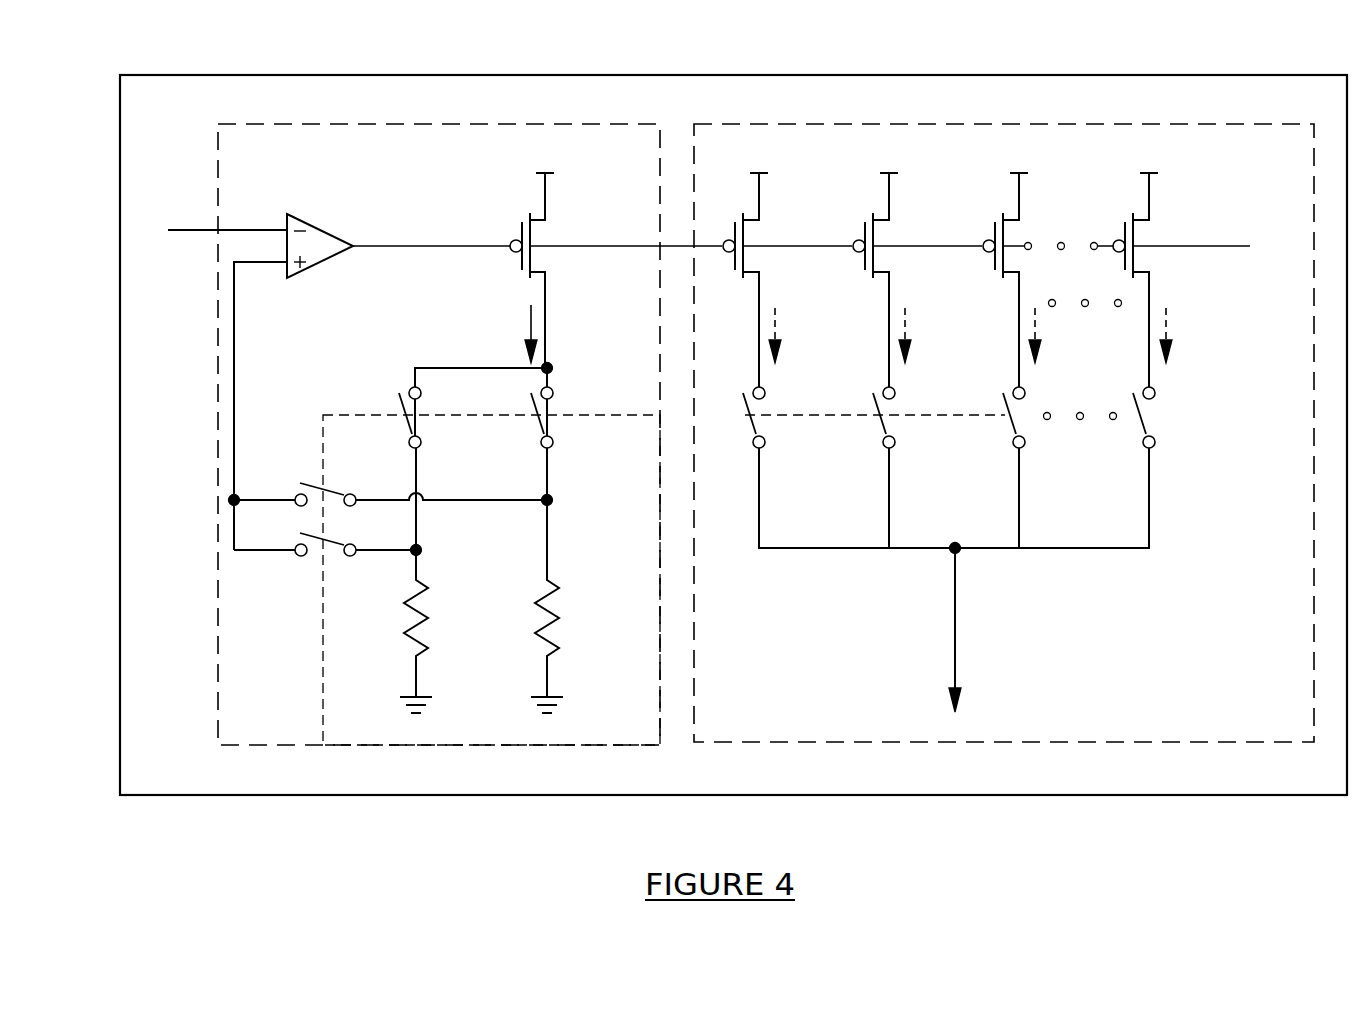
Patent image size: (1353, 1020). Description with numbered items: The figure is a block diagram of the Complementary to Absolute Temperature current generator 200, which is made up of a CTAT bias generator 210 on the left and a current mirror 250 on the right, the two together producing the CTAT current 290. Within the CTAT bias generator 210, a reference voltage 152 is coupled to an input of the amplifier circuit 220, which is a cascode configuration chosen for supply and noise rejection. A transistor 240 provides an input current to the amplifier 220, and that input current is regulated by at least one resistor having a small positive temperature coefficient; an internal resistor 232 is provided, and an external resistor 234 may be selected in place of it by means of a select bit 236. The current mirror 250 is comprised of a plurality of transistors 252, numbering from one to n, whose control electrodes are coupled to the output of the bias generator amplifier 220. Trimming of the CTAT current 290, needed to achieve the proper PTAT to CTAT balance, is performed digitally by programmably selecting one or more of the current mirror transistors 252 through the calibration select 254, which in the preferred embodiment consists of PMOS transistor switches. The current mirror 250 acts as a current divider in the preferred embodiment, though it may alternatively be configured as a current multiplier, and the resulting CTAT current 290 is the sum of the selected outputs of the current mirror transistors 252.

The CTAT current generator 200 is at (1212, 75).
The reference voltage 152 is at (203, 232).
The CTAT bias generator 210 is at (217, 472).
The amplifier circuit 220 is at (318, 267).
The transistor 240 is at (518, 226).
The select bit 236 is at (260, 603).
The external resistor 234 is at (422, 617).
The internal resistor 232 is at (553, 617).
The current mirror 250 is at (776, 741).
The current mirror transistors 252 is at (1180, 246).
The calibration select switches 254 is at (1205, 468).
The CTAT current 290 is at (1030, 704).